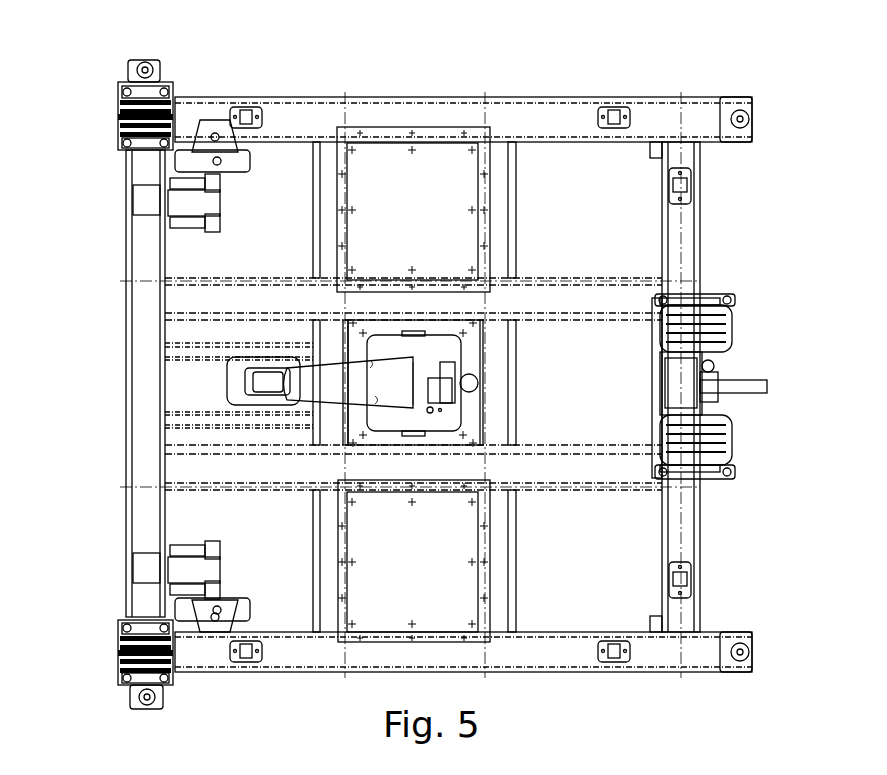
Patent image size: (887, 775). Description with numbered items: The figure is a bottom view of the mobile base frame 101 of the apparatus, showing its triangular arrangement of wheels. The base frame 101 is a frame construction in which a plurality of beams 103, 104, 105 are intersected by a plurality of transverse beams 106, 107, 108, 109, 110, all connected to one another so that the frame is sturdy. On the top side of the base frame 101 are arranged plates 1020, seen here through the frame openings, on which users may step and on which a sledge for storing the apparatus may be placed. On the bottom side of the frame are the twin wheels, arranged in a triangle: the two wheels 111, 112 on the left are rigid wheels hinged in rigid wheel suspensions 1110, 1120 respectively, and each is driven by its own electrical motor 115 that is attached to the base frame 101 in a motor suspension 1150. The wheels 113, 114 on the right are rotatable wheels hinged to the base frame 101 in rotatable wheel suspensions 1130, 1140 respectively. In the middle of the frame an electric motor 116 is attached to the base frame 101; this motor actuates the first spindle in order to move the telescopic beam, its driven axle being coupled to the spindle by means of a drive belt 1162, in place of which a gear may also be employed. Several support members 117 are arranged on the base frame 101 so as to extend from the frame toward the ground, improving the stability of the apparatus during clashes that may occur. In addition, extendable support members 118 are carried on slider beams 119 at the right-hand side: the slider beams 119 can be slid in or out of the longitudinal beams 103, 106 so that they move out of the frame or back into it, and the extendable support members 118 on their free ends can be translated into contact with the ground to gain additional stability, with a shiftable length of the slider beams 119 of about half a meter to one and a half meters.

The base frame 101 is at (352, 698).
The beam 103 is at (530, 655).
The beam 104 is at (555, 478).
The beam 105 is at (560, 302).
The transverse beam 106 is at (545, 128).
The transverse beam 107 is at (135, 350).
The transverse beam 108 is at (325, 243).
The transverse beam 109 is at (514, 249).
The transverse beam 110 is at (680, 230).
The rigid wheel 111 is at (120, 662).
The rigid wheel suspension 1110 is at (172, 688).
The rigid wheel 112 is at (120, 95).
The rigid wheel suspension 1120 is at (128, 140).
The rotatable wheel 113 is at (735, 440).
The rotatable wheel suspension 1130 is at (700, 478).
The rotatable wheel 114 is at (735, 328).
The rotatable wheel suspension 1140 is at (690, 290).
The electrical motor 115 is at (235, 165).
The motor suspension 1150 is at (188, 222).
The electric motor 116 is at (230, 368).
The drive belt 1162 is at (445, 408).
The support member 117 is at (255, 107).
The extendable support member 118 is at (752, 118).
The slider beam 119 is at (735, 97).
The plate 1020 is at (432, 228).